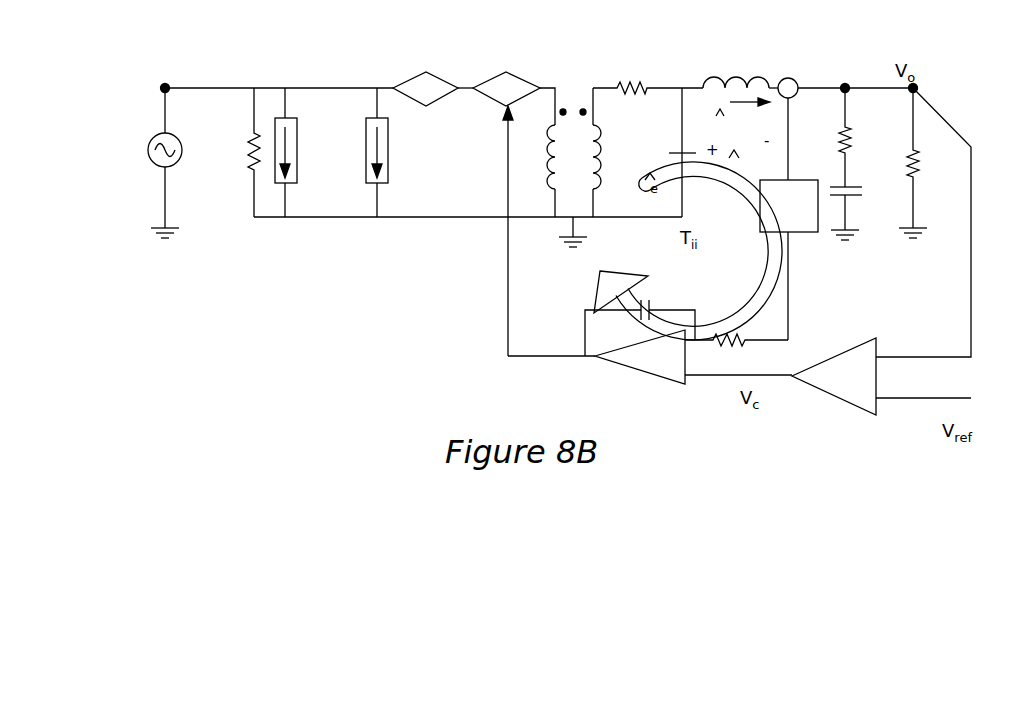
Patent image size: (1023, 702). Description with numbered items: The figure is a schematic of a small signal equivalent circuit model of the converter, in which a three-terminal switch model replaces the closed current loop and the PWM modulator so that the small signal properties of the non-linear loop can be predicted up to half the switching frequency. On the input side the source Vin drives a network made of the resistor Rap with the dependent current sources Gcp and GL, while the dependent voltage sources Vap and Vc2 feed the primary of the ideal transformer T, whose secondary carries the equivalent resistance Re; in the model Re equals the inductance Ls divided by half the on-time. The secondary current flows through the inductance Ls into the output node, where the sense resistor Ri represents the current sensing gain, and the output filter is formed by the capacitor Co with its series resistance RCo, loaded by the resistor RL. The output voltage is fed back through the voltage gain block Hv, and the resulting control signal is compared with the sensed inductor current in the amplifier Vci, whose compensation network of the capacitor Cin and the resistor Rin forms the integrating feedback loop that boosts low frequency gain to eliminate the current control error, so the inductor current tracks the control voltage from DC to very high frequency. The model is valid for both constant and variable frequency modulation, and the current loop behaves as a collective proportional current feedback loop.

The input voltage source Vin is at (145, 161).
The resistor Rap is at (234, 152).
The dependent current source Vcp* Gcp is at (318, 152).
The dependent current source VL* GL is at (404, 152).
The dependent voltage source Vap*Kap Vap is at (415, 70).
The dependent voltage source Vc*Re/DRi Vc2 is at (507, 70).
The ideal transformer 1:D T is at (576, 152).
The equivalent resistance Re is at (648, 110).
The inductance Ls is at (740, 95).
The current sense resistor Ri is at (789, 219).
The output capacitor ESR RCo is at (862, 137).
The output capacitor Co is at (859, 211).
The load resistor RL is at (922, 163).
The voltage feedback amplifier Hv is at (881, 376).
The current error amplifier Vci is at (650, 360).
The compensation capacitor Cin is at (640, 310).
The compensation resistor Rin is at (736, 325).